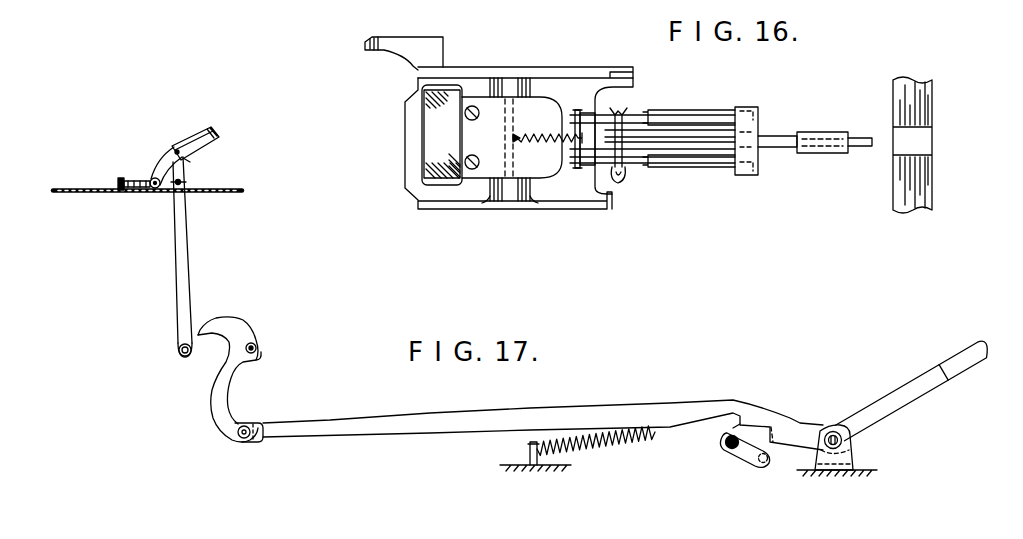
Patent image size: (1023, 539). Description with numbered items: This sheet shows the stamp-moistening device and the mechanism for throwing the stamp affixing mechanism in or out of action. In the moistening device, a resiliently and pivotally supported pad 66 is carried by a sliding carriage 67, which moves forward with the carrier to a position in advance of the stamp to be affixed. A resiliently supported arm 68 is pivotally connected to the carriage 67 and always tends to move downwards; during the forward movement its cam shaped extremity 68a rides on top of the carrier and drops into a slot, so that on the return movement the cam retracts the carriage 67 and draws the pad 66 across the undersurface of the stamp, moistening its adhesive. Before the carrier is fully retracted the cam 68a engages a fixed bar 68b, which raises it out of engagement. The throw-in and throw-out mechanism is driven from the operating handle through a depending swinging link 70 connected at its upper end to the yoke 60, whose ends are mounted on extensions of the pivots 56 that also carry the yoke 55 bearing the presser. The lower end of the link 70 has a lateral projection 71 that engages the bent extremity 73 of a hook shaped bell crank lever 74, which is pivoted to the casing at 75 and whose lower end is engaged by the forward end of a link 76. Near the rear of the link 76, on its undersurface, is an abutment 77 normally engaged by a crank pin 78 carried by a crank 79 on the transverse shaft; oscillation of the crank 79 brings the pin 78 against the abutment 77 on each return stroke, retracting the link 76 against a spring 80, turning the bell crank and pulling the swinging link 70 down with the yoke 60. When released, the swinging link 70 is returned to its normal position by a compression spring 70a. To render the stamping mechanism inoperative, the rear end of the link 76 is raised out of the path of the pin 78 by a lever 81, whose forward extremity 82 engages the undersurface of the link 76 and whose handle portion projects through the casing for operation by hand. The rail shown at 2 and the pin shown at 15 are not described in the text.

In FIG. 16, the pad 66 is at (425, 127).
In FIG. 16, the sliding carriage 67 is at (551, 67).
In FIG. 16, the resilient supported arm 68 is at (782, 148).
In FIG. 16, the cam shaped extremity 68a is at (806, 153).
In FIG. 16, the fixed bar 68b is at (900, 135).
In FIG. 17, the rail 2 is at (211, 188).
In FIG. 17, the compression spring 70a is at (138, 178).
In FIG. 17, the pivots 56 is at (152, 190).
In FIG. 17, the yoke 60 is at (190, 131).
In FIG. 17, the yoke 55 is at (204, 144).
In FIG. 17, the swinging link 70 is at (188, 262).
In FIG. 17, the lateral projection 71 is at (178, 365).
In FIG. 17, the bent extremity 73 is at (222, 321).
In FIG. 17, the pivot 75 is at (255, 347).
In FIG. 17, the bell crank lever 74 is at (261, 355).
In FIG. 17, the link 76 is at (389, 416).
In FIG. 17, the spring 80 is at (603, 428).
In FIG. 17, the abutment 77 is at (730, 419).
In FIG. 17, the pin 15 is at (722, 445).
In FIG. 17, the crank 79 is at (740, 457).
In FIG. 17, the crank pin 78 is at (755, 467).
In FIG. 17, the forward extremity 82 is at (800, 435).
In FIG. 17, the lever 81 is at (886, 410).